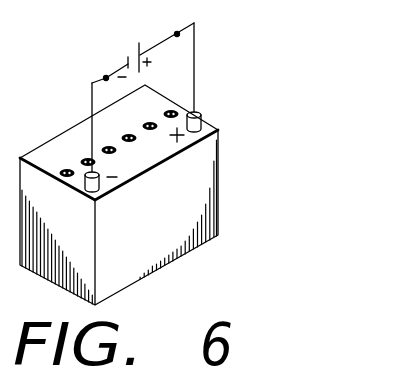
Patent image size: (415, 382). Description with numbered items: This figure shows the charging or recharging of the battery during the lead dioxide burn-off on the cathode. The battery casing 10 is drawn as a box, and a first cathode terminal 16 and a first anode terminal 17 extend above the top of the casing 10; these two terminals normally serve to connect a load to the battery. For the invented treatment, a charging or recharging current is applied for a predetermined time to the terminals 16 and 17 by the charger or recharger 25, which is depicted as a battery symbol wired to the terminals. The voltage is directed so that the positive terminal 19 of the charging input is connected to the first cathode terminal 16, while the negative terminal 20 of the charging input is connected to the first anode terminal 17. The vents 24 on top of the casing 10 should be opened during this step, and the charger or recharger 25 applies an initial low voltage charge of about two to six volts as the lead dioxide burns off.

The casing 10 is at (163, 219).
The first cathode terminal 16 is at (198, 111).
The first anode terminal 17 is at (85, 186).
The positive terminal 19 is at (176, 32).
The negative terminal 20 is at (104, 76).
The vents 24 is at (85, 158).
The charger or recharger 25 is at (134, 45).